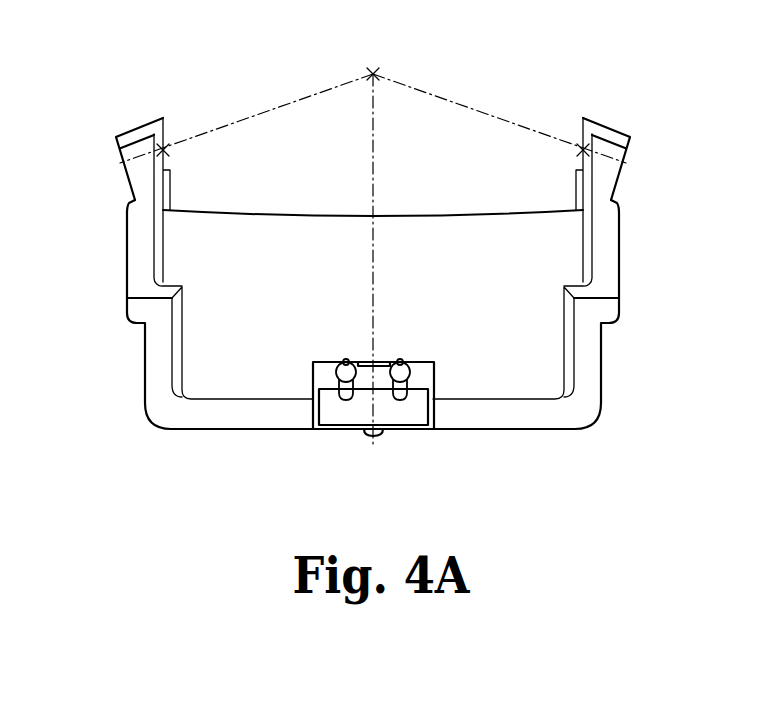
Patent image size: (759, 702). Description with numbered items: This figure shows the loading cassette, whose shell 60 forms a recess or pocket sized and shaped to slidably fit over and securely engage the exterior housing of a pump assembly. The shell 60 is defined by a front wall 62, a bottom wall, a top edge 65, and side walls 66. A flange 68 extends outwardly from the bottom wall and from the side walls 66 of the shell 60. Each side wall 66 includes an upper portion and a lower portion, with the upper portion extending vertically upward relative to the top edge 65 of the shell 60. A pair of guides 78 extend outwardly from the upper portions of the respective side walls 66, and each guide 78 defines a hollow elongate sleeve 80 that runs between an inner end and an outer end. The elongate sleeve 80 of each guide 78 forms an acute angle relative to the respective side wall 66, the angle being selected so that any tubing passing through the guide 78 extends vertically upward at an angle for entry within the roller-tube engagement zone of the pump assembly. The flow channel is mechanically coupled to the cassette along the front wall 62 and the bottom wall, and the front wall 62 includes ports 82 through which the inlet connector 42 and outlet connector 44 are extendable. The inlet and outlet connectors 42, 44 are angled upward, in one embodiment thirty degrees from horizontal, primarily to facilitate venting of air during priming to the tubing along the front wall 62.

The inlet connector 42 is at (400, 359).
The outlet connector 44 is at (346, 359).
The shell 60 is at (235, 378).
The front wall 62 is at (263, 300).
The top edge 65 is at (431, 212).
The side walls 66 is at (152, 250).
The flange 68 is at (607, 311).
The guides 78 is at (133, 116).
The hollow elongate sleeve 80 is at (123, 165).
The ports 82 is at (333, 393).